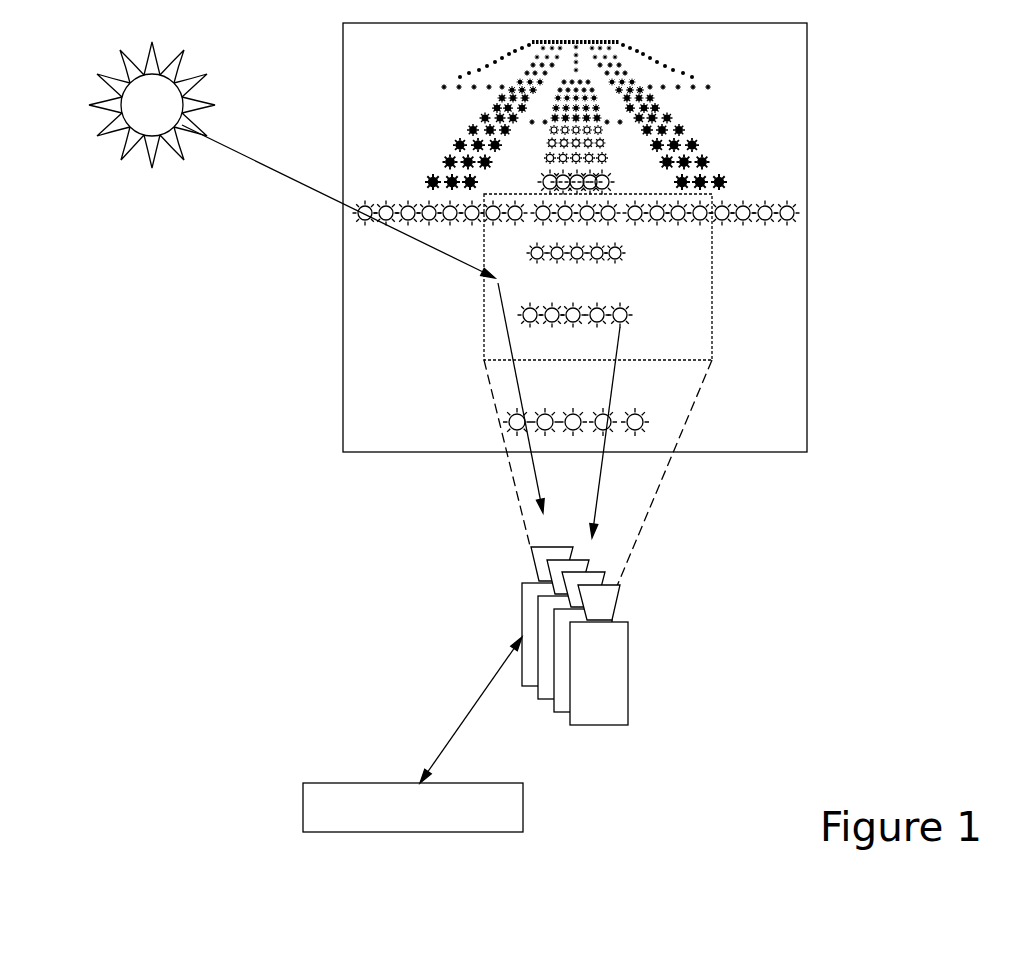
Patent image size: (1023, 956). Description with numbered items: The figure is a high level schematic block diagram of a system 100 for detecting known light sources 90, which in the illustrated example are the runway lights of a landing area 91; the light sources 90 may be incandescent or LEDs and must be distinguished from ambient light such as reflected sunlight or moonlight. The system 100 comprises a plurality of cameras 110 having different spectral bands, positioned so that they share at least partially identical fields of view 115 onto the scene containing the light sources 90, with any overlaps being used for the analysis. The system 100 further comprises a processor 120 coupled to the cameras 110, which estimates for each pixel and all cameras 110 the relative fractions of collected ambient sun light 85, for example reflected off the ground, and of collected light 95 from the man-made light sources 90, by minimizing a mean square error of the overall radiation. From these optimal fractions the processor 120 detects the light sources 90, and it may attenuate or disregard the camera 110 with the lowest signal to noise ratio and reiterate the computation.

The sun light 85 is at (522, 385).
The light sources 90 is at (633, 307).
The landing area 91 is at (633, 60).
The collected light 95 is at (613, 380).
The system 100 is at (722, 558).
The cameras 110 is at (628, 673).
The fields of view 115 is at (484, 296).
The processor 120 is at (373, 783).